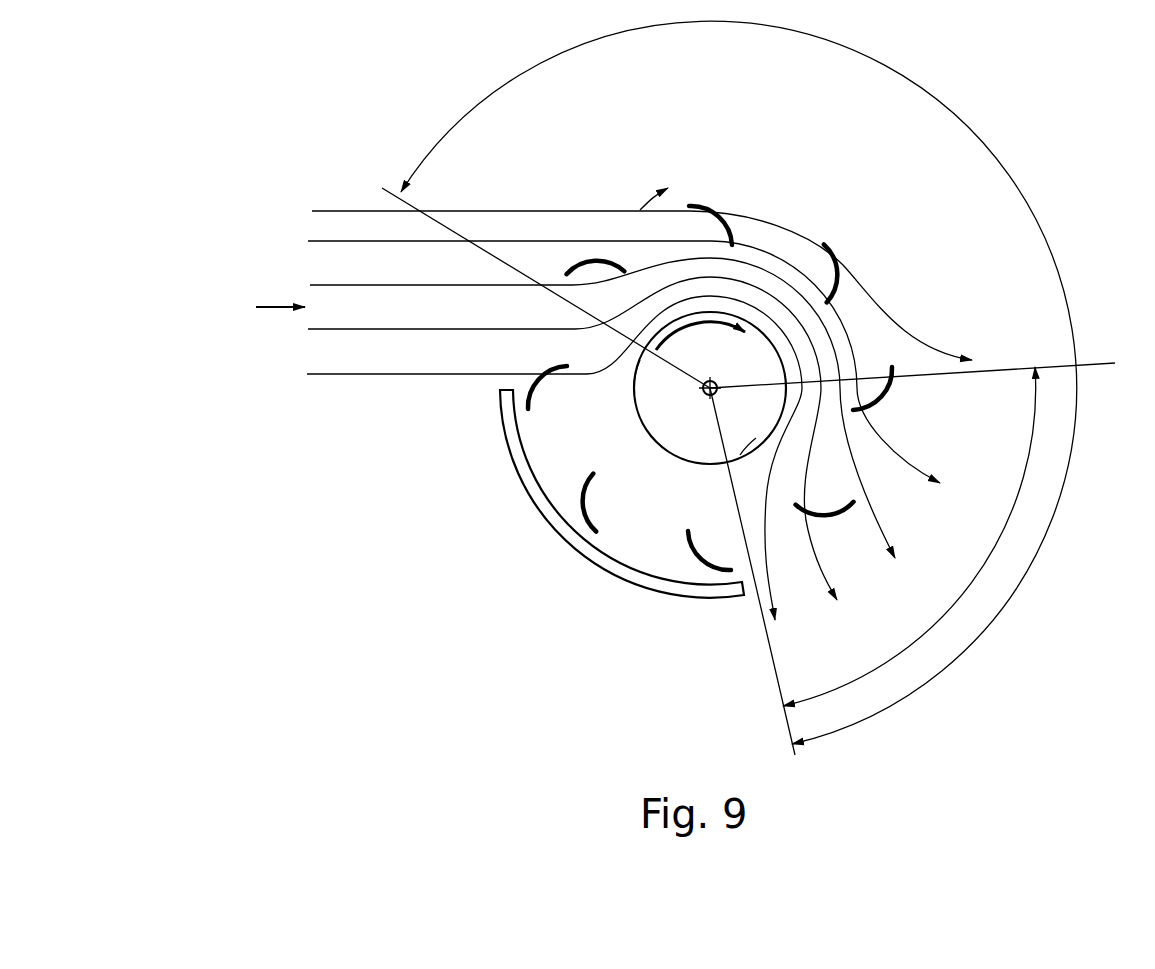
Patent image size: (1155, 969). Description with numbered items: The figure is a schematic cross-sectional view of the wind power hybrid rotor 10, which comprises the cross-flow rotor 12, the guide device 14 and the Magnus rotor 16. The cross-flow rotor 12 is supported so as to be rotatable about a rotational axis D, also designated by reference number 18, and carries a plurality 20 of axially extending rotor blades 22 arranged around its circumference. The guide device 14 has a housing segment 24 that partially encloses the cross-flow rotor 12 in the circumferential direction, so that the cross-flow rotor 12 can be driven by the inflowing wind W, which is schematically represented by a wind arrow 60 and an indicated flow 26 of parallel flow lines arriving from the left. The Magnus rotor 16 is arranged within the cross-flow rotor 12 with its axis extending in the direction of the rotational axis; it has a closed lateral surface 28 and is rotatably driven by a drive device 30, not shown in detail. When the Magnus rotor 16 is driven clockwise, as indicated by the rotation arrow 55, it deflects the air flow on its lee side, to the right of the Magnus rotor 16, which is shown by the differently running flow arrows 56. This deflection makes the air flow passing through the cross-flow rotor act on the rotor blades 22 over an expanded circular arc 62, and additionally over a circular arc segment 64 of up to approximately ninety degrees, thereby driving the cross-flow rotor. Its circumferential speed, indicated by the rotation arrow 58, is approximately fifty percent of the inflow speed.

The wind power hybrid rotor 10 is at (607, 165).
The cross-flow rotor 12 is at (758, 195).
The guide device 14 is at (500, 420).
The Magnus rotor 16 is at (675, 470).
The rotational axis 18 is at (712, 394).
The plurality of rotor blades 20 is at (825, 228).
The rotor blades 22 is at (578, 266).
The housing segment 24 is at (542, 502).
The indicated flow 26 is at (332, 211).
The closed lateral surface 28 is at (636, 400).
The drive device 30 is at (744, 470).
The rotation arrow 55 is at (710, 323).
The flow arrows 56 is at (933, 320).
The rotation arrow 58 is at (640, 210).
The wind arrow 60 is at (270, 318).
The expanded circular arc 62 is at (958, 125).
The additional circular arc segment 64 is at (985, 568).
The rotational axis D is at (714, 371).